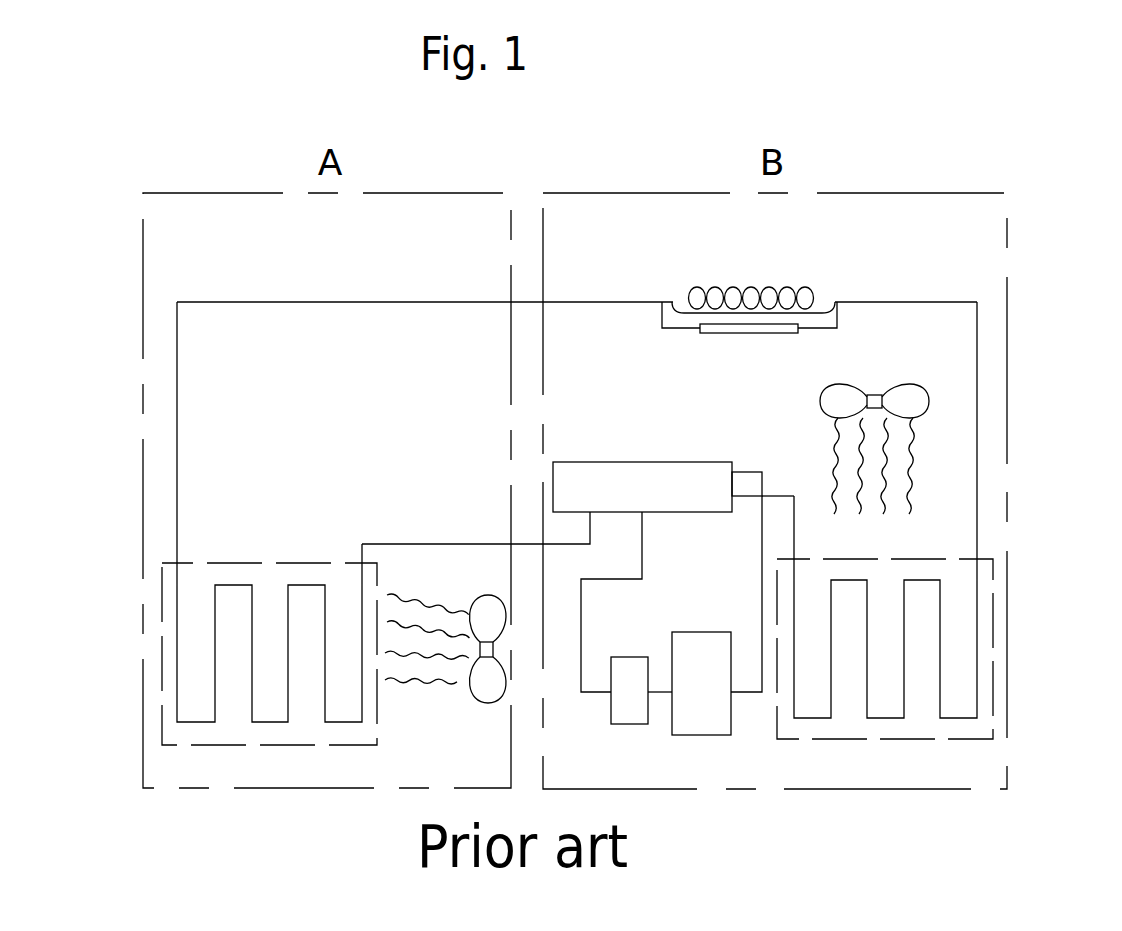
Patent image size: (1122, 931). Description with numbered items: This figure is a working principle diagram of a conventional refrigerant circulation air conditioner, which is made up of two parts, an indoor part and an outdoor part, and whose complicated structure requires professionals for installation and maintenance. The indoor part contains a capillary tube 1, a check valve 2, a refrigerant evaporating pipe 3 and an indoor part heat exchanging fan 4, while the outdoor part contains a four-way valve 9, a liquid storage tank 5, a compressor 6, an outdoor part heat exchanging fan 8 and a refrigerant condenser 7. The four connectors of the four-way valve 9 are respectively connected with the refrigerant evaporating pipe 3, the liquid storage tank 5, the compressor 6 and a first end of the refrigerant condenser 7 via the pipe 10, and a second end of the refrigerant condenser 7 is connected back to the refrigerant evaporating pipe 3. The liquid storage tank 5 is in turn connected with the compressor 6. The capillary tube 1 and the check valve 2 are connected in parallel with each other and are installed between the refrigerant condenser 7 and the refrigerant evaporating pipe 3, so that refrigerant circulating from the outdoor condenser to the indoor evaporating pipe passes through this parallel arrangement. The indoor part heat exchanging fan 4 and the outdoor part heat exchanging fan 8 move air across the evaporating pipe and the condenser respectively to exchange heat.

The capillary tube 1 is at (730, 298).
The check valve 2 is at (750, 333).
The refrigerant evaporating pipe 3 is at (162, 600).
The indoor part heat exchanging fan 4 is at (487, 695).
The liquid storage tank 5 is at (634, 670).
The compressor 6 is at (706, 645).
The refrigerant condenser 7 is at (993, 593).
The outdoor part heat exchanging fan 8 is at (843, 398).
The four-way valve 9 is at (626, 478).
The pipe 10 is at (440, 302).